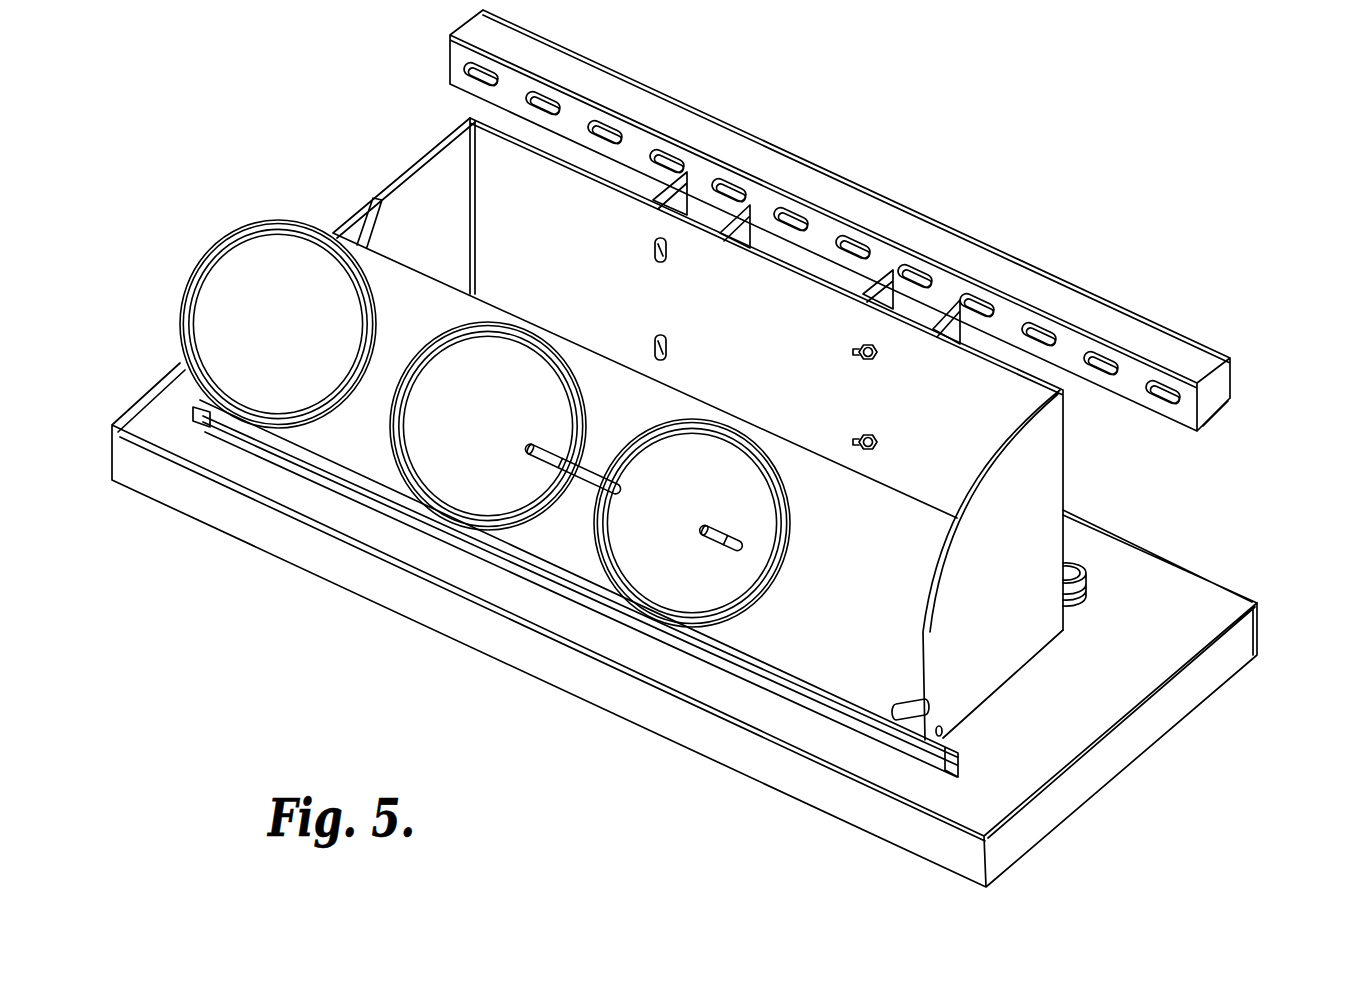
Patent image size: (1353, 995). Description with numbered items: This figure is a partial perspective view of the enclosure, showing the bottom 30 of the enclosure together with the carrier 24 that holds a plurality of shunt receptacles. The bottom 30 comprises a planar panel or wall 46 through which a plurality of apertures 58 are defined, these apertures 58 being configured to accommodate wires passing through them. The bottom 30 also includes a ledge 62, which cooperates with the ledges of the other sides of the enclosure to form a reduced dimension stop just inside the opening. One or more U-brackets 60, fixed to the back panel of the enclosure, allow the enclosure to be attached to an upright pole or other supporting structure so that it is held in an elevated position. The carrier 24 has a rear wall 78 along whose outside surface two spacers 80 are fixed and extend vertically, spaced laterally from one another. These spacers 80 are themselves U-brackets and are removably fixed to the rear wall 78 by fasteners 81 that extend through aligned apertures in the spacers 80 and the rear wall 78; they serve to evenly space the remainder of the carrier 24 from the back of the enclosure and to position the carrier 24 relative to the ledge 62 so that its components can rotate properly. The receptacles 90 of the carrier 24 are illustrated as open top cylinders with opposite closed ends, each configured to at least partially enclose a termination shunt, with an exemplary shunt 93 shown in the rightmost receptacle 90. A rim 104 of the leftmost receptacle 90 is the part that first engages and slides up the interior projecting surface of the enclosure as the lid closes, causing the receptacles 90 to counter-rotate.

The carrier 24 is at (403, 145).
The bottom 30 is at (943, 745).
The planar panel or wall of the bottom 46 is at (1177, 642).
The apertures 58 is at (1090, 568).
The U-brackets 60 is at (1196, 354).
The ledge 62 is at (1212, 700).
The rear wall 78 is at (555, 197).
The spacers 80 is at (740, 217).
The fasteners 81 is at (857, 440).
The receptacles 90 is at (322, 437).
The shunt 93 is at (757, 502).
The rim 104 is at (214, 271).